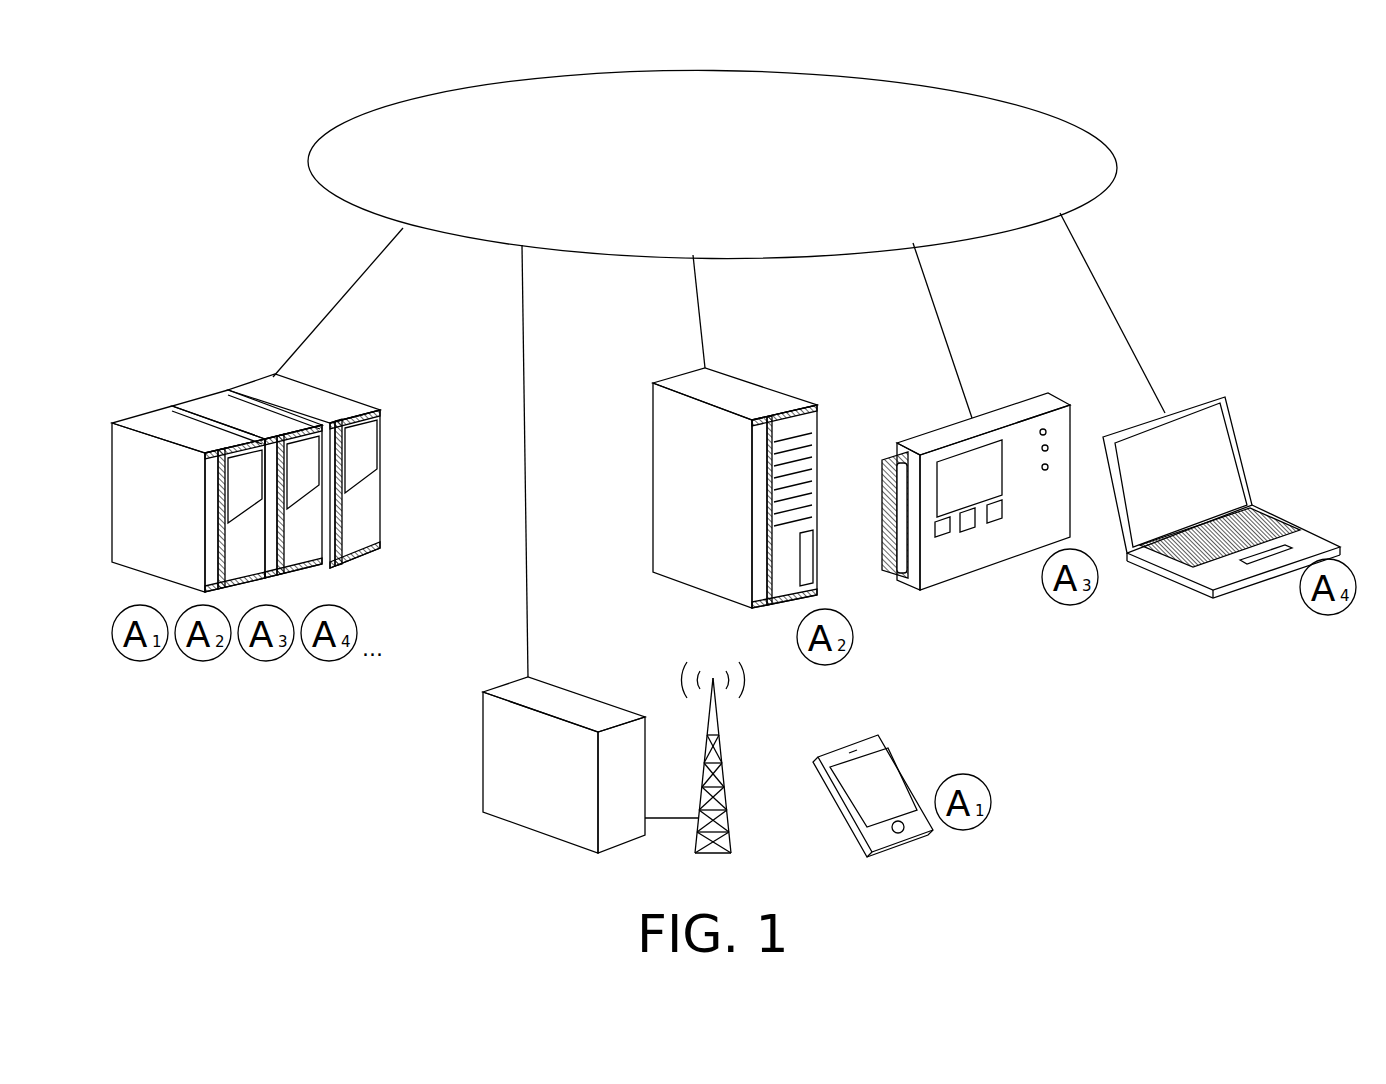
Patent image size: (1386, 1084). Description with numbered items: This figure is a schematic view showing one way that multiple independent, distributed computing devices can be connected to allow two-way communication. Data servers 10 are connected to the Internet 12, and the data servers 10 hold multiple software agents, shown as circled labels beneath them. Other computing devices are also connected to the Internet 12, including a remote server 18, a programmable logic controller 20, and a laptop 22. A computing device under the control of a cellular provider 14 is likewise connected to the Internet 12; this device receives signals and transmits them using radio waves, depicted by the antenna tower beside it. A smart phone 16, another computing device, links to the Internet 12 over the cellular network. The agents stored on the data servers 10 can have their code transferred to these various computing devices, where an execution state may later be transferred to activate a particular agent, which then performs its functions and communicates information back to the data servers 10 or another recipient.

The data servers 10 is at (193, 398).
The internet 12 is at (1053, 112).
The cellular provider 14 is at (538, 832).
The smart phone 16 is at (907, 842).
The remote server 18 is at (702, 588).
The programmable logic controller 20 is at (957, 578).
The laptop 22 is at (1227, 592).